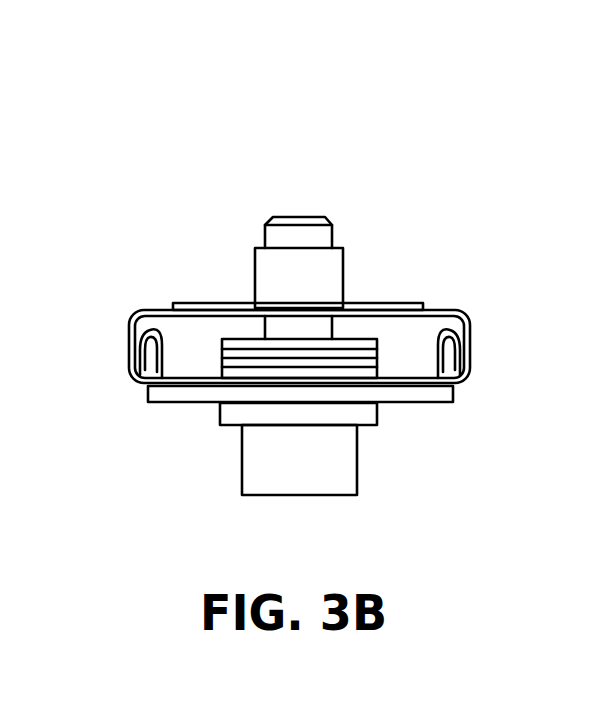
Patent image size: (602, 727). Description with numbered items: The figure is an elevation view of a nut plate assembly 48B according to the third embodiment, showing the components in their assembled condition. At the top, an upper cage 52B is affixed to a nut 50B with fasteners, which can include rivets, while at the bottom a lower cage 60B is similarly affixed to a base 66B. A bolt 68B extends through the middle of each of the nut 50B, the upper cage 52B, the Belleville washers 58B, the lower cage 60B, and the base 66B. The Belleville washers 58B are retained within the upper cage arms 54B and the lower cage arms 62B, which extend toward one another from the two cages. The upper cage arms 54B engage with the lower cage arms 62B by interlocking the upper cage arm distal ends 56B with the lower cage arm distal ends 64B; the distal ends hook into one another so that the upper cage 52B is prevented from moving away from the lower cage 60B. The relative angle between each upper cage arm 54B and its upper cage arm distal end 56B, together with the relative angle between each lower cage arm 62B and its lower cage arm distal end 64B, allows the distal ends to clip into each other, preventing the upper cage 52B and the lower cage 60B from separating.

The nut plate assembly 48B is at (200, 202).
The nut 50B is at (347, 275).
The upper cage 52B is at (463, 310).
The upper cage arms 54B is at (125, 337).
The upper cage arm distal ends 56B is at (138, 356).
The Belleville washers 58B is at (378, 352).
The lower cage 60B is at (448, 380).
The lower cage arms 62B is at (168, 352).
The lower cage arm distal ends 64B is at (148, 330).
The base 66B is at (430, 403).
The bolt 68B is at (360, 473).